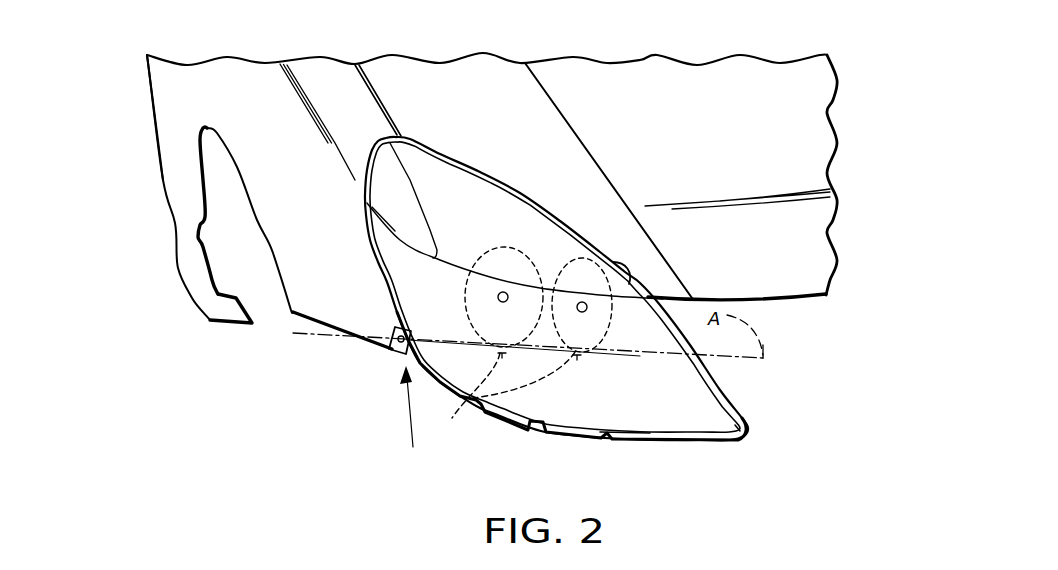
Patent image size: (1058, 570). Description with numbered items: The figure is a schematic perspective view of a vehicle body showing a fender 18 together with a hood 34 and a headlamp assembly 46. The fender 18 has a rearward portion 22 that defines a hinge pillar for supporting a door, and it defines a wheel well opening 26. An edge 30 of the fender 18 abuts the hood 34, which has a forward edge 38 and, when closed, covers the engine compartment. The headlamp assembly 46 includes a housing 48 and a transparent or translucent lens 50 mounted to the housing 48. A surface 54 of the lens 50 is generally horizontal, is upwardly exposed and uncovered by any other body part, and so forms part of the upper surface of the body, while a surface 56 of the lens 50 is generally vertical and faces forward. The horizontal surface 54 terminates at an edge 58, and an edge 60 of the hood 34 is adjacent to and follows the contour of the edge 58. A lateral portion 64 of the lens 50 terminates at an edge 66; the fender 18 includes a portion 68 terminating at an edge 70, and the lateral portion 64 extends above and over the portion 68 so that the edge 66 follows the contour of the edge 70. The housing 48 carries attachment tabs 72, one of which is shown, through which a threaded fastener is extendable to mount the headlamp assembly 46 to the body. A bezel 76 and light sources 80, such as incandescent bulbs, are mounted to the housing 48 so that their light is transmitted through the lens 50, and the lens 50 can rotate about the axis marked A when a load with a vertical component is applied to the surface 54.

The fender 18 is at (188, 213).
The rearward portion 22 is at (158, 142).
The wheel well opening 26 is at (247, 202).
The edge 30 is at (383, 100).
The hood 34 is at (783, 272).
The forward edge 38 is at (763, 303).
The headlamp assembly 46 is at (697, 390).
The housing 48 is at (497, 420).
The lens 50 is at (683, 417).
The surface 54 is at (497, 207).
The surface 56 is at (613, 415).
The edge 58 is at (460, 163).
The edge 60 is at (617, 260).
The lateral portion 64 is at (387, 182).
The edge 66 is at (365, 256).
The portion 68 is at (355, 297).
The edge 70 is at (393, 350).
The tab 72 is at (410, 420).
The bezel 76 is at (506, 398).
The light source 80 is at (507, 290).